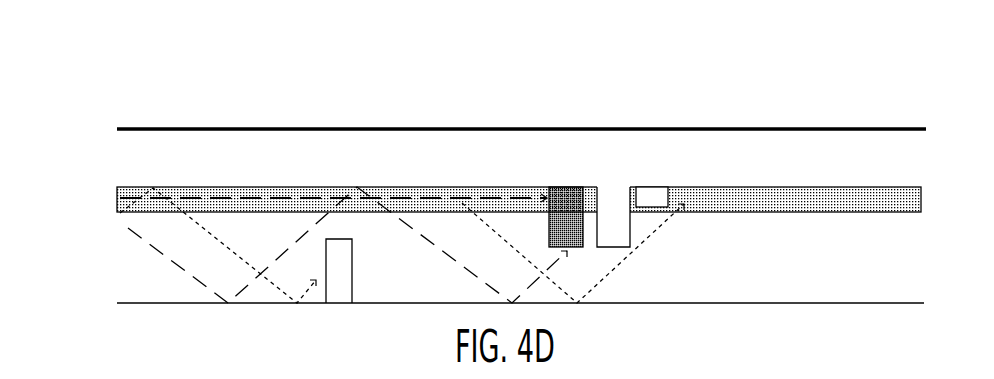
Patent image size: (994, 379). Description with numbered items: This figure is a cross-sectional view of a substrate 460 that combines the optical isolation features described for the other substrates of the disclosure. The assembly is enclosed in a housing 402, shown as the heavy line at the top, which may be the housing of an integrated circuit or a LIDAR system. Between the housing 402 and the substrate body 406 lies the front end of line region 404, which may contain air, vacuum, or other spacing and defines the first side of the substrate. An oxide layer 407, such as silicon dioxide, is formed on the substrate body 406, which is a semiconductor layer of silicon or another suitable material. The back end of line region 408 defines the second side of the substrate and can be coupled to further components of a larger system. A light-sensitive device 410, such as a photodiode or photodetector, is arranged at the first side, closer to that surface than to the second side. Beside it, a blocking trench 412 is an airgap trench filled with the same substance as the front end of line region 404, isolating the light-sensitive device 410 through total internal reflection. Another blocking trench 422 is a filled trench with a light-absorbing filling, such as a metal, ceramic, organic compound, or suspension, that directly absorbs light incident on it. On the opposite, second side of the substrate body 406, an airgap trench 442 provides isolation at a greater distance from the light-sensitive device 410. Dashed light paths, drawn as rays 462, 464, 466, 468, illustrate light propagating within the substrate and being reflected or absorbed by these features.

The housing 402 is at (210, 128).
The front end of line (FEOL) region 404 is at (118, 153).
The substrate body 406 is at (115, 240).
The oxide layer 407 is at (116, 193).
The back end of line (BEOL) region 408 is at (123, 327).
The light-sensitive device 410 is at (650, 208).
The blocking trench 412 is at (615, 248).
The blocking trench 422 is at (548, 223).
The airgap trench 442 is at (342, 239).
The display stack 460 is at (97, 90).
The first light ray 462 is at (155, 262).
The guided light 464 is at (232, 206).
The third light ray 466 is at (617, 279).
The second light ray 468 is at (197, 236).